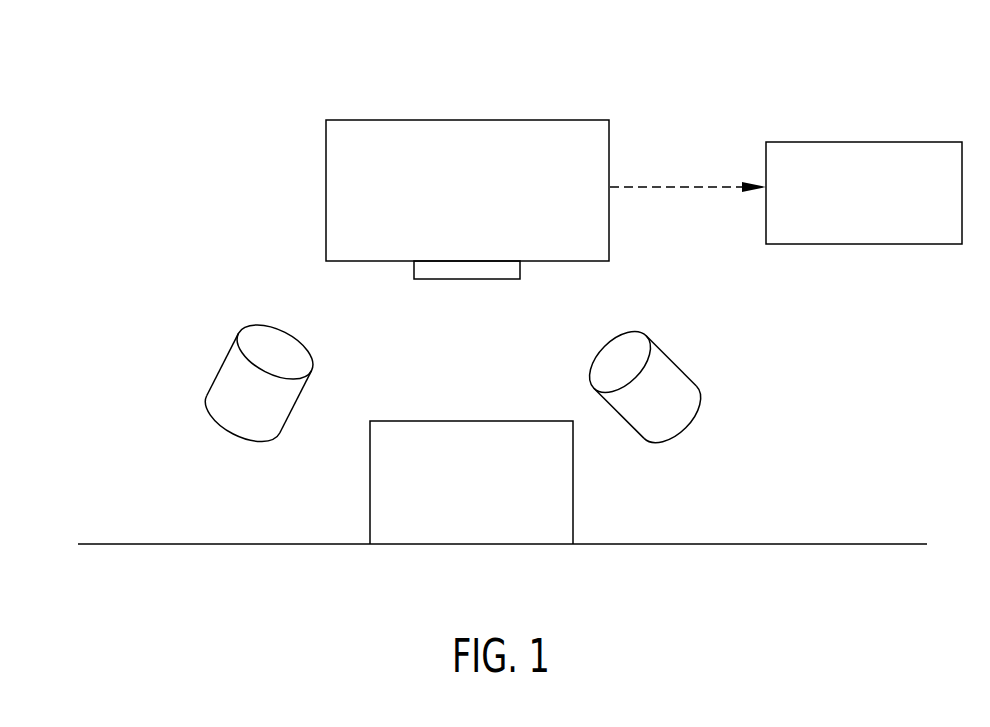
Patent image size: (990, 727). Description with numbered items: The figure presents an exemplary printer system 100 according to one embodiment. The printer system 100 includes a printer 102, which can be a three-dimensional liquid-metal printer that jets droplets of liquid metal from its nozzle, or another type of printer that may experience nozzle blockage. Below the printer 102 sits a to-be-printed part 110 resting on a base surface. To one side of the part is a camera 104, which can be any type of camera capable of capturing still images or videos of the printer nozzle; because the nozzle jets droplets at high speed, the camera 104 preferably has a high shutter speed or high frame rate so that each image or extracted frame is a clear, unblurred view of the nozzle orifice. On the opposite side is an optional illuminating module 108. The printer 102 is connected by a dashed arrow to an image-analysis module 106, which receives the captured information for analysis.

The printer system 100 is at (208, 115).
The printer 102 is at (483, 120).
The camera 104 is at (667, 360).
The image-analysis module 106 is at (865, 142).
The illuminating module 108 is at (308, 370).
The to-be-printed part 110 is at (458, 497).